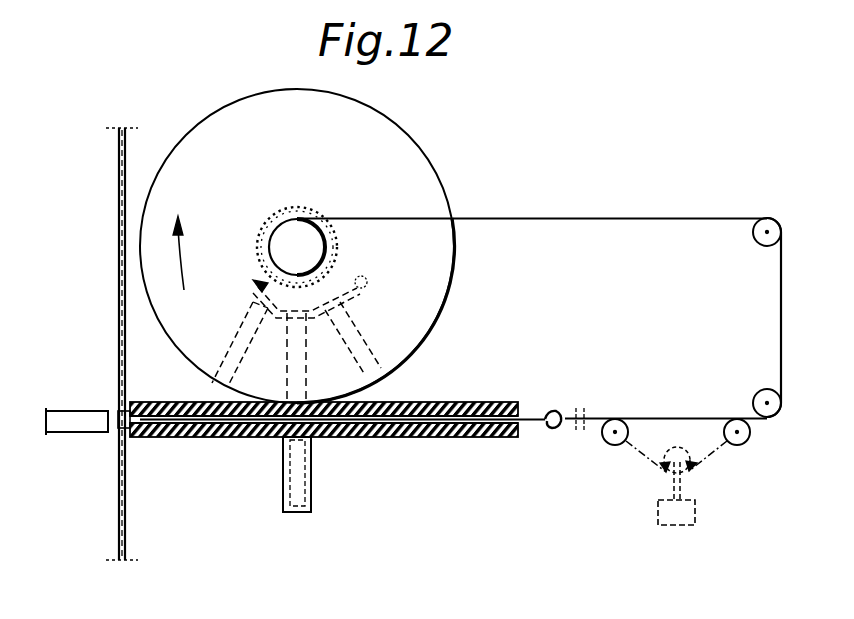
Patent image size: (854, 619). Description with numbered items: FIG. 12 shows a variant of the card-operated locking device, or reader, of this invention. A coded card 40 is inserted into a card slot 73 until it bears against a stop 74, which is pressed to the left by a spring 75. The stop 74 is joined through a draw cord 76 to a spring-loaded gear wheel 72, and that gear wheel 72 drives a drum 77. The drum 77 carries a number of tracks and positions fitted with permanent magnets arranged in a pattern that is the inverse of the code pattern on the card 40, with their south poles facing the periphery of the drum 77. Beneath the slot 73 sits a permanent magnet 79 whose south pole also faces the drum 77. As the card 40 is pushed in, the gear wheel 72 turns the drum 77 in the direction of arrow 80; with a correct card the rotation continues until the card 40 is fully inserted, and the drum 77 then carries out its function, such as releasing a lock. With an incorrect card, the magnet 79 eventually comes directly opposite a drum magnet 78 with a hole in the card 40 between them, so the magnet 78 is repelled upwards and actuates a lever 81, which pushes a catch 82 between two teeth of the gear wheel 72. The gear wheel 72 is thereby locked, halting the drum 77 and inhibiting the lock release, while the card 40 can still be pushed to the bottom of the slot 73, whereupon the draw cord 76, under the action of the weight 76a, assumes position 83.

The card 40 is at (96, 436).
The spring-loaded gear wheel 72 is at (338, 214).
The card slot 73 is at (215, 440).
The stop 74 is at (130, 443).
The spring 75 is at (390, 440).
The draw cord 76 is at (672, 418).
The weight 76a is at (680, 520).
The drum 77 is at (361, 132).
The magnet 78 is at (305, 362).
The permanent magnet 79 is at (298, 478).
The arrow 80 is at (175, 242).
The lever 81 is at (313, 338).
The catch 82 is at (255, 283).
The position 83 is at (707, 451).